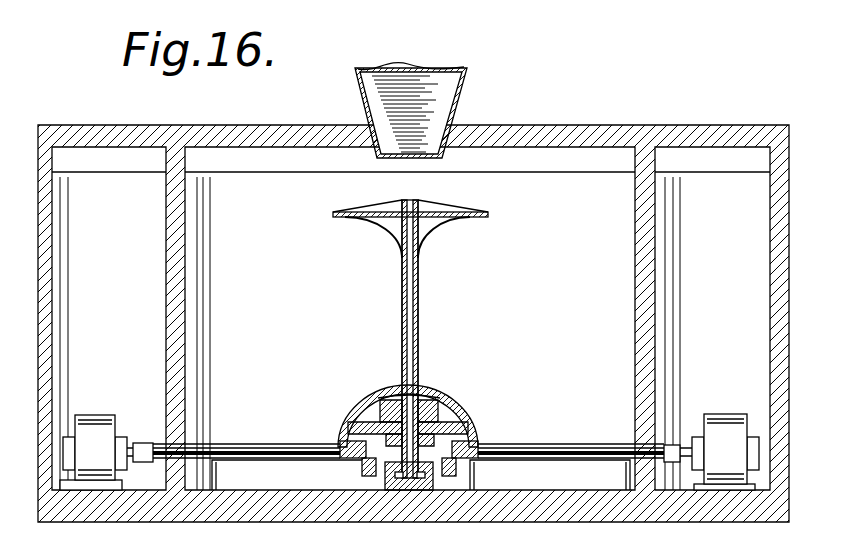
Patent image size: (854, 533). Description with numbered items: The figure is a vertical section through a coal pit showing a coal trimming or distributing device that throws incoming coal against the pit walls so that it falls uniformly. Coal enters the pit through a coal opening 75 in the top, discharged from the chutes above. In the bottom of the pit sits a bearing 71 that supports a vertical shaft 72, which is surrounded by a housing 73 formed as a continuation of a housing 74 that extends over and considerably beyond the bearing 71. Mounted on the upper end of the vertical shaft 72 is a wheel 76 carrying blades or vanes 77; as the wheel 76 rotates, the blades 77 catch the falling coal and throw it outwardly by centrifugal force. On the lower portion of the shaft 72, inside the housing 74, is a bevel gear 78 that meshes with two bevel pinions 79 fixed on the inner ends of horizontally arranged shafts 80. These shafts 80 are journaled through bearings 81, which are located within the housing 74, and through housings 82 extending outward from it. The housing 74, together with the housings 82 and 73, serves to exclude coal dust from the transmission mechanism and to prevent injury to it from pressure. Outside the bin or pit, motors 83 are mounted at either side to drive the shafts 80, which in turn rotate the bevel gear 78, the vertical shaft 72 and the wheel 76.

The bearing 71 is at (430, 396).
The vertical shaft 72 is at (444, 420).
The housing 73 is at (419, 330).
The housing 74 is at (368, 400).
The coal opening 75 is at (461, 130).
The wheel 76 is at (440, 226).
The blades or vanes 77 is at (472, 210).
The bevel gear 78 is at (390, 402).
The bevel pinions 79 is at (348, 438).
The shafts 80 is at (250, 446).
The bearings 81 is at (346, 462).
The housings 82 is at (262, 462).
The motors 83 is at (120, 414).